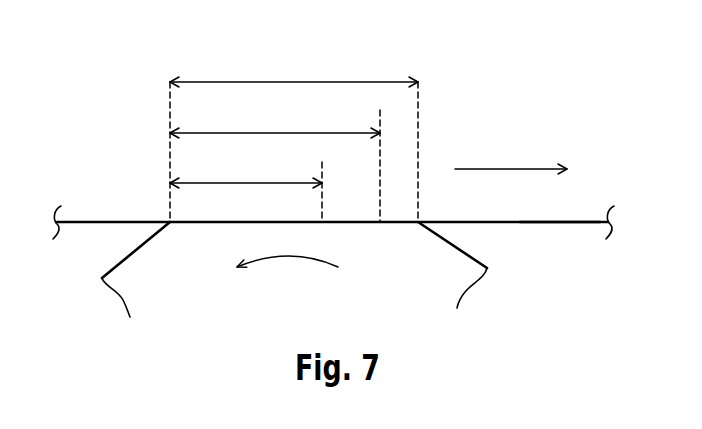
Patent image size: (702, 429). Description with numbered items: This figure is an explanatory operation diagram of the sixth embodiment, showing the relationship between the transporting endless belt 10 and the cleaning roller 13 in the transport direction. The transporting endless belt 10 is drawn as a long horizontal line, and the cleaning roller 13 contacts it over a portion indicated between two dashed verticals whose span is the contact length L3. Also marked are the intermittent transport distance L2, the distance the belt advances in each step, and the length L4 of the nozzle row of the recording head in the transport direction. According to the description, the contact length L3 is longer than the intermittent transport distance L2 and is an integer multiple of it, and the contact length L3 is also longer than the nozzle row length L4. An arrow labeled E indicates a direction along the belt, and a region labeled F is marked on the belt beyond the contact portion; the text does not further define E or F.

The transporting endless belt 10 is at (113, 222).
The cleaning roller 13 is at (150, 250).
The intermittent transport distance L2 is at (218, 183).
The contact length L3 is at (285, 82).
The length of the nozzle row L4 is at (217, 133).
The conveying direction E is at (511, 156).
The downstream portion F is at (540, 222).